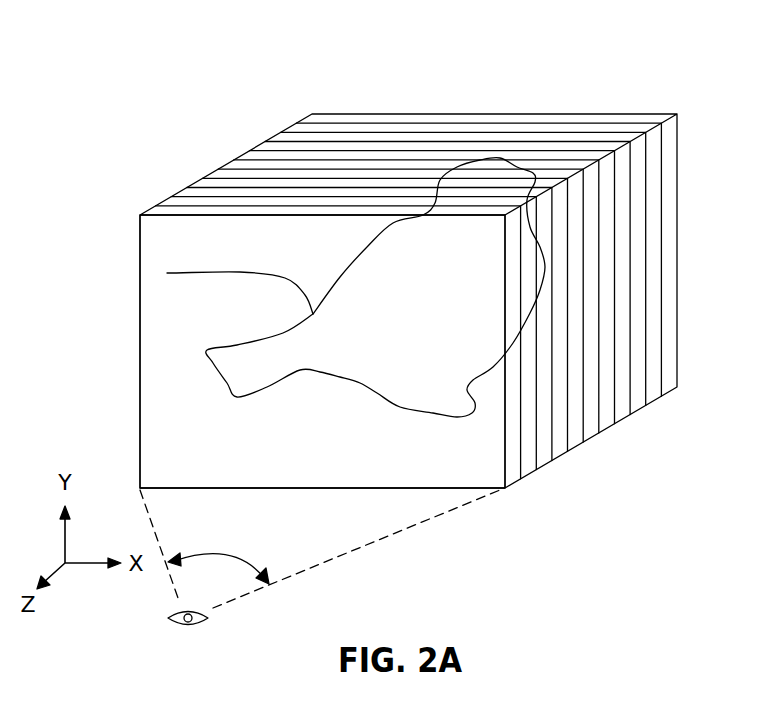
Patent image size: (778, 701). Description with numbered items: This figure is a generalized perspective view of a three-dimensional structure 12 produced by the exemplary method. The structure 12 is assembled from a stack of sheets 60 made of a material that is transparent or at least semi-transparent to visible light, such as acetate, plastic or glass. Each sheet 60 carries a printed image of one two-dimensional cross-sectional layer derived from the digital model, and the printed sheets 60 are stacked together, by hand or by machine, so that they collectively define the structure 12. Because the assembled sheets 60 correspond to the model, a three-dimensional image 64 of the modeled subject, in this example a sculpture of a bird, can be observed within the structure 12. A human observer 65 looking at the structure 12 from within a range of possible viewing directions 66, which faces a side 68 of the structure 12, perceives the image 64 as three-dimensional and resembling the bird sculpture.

The 3D structure 12 is at (653, 78).
The sheets 60 is at (510, 487).
The 3D image 64 is at (167, 273).
The human observer 65 is at (184, 625).
The range of possible viewing directions 66 is at (227, 559).
The side 68 is at (413, 482).